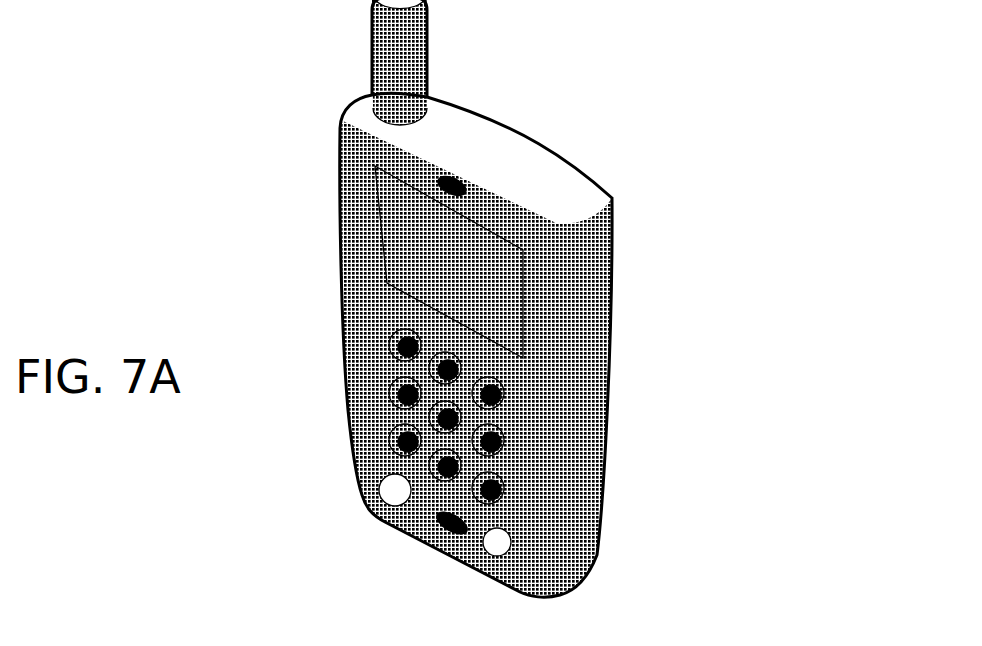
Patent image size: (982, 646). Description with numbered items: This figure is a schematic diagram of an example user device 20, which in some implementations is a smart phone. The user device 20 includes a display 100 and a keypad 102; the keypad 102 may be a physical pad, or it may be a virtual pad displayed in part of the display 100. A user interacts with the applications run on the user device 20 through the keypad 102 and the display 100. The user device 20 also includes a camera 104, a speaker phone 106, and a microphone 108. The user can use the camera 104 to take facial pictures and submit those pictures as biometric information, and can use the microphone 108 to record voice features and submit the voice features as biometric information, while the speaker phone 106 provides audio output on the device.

The user device 20 is at (268, 116).
The display 100 is at (449, 262).
The keypad 102 is at (509, 548).
The camera 104 is at (463, 187).
The speaker phone 106 is at (380, 485).
The microphone 108 is at (447, 531).